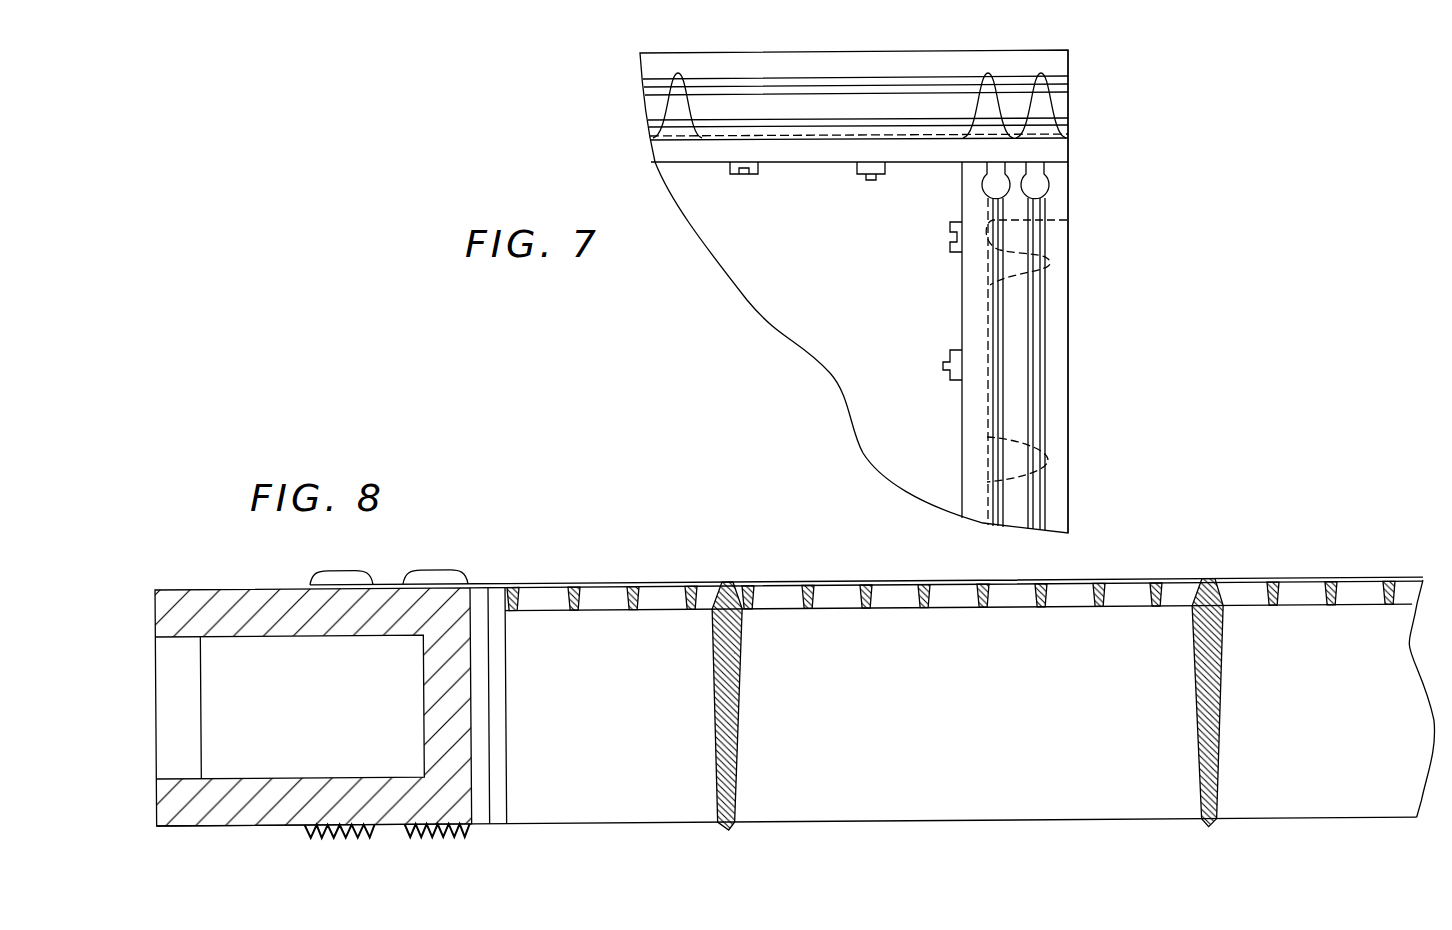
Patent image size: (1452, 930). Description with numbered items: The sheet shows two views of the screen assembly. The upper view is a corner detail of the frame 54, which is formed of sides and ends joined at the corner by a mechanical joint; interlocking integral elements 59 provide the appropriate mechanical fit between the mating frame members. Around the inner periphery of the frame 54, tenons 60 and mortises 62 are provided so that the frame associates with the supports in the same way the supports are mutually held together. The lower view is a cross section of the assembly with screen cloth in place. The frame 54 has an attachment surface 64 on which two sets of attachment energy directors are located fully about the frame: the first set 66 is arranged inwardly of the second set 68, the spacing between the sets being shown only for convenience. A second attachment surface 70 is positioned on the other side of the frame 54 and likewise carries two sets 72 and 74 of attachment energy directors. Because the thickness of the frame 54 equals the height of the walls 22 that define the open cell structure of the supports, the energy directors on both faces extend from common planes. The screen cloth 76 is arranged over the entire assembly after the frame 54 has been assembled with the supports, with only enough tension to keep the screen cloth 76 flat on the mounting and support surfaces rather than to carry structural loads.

In FIG. 8, the wall 22 is at (1223, 665).
In FIG. 7, the frame 54 is at (1070, 368).
In FIG. 7, the interlocking integral element 59 is at (1050, 182).
In FIG. 7, the tenon 60 is at (806, 128).
In FIG. 7, the mortise 62 is at (948, 246).
In FIG. 7, the attachment surface 64 is at (935, 63).
In FIG. 8, the attachment surface 64 is at (210, 589).
In FIG. 7, the first set of attachment energy directors 66 is at (975, 338).
In FIG. 8, the first set of attachment energy directors 66 is at (432, 575).
In FIG. 7, the second set of attachment energy directors 68 is at (793, 80).
In FIG. 8, the second set of attachment energy directors 68 is at (336, 571).
In FIG. 8, the second attachment surface 70 is at (228, 827).
In FIG. 8, the set of attachment energy directors 72 is at (464, 834).
In FIG. 8, the set of attachment energy directors 74 is at (348, 839).
In FIG. 8, the screen cloth 76 is at (1357, 580).